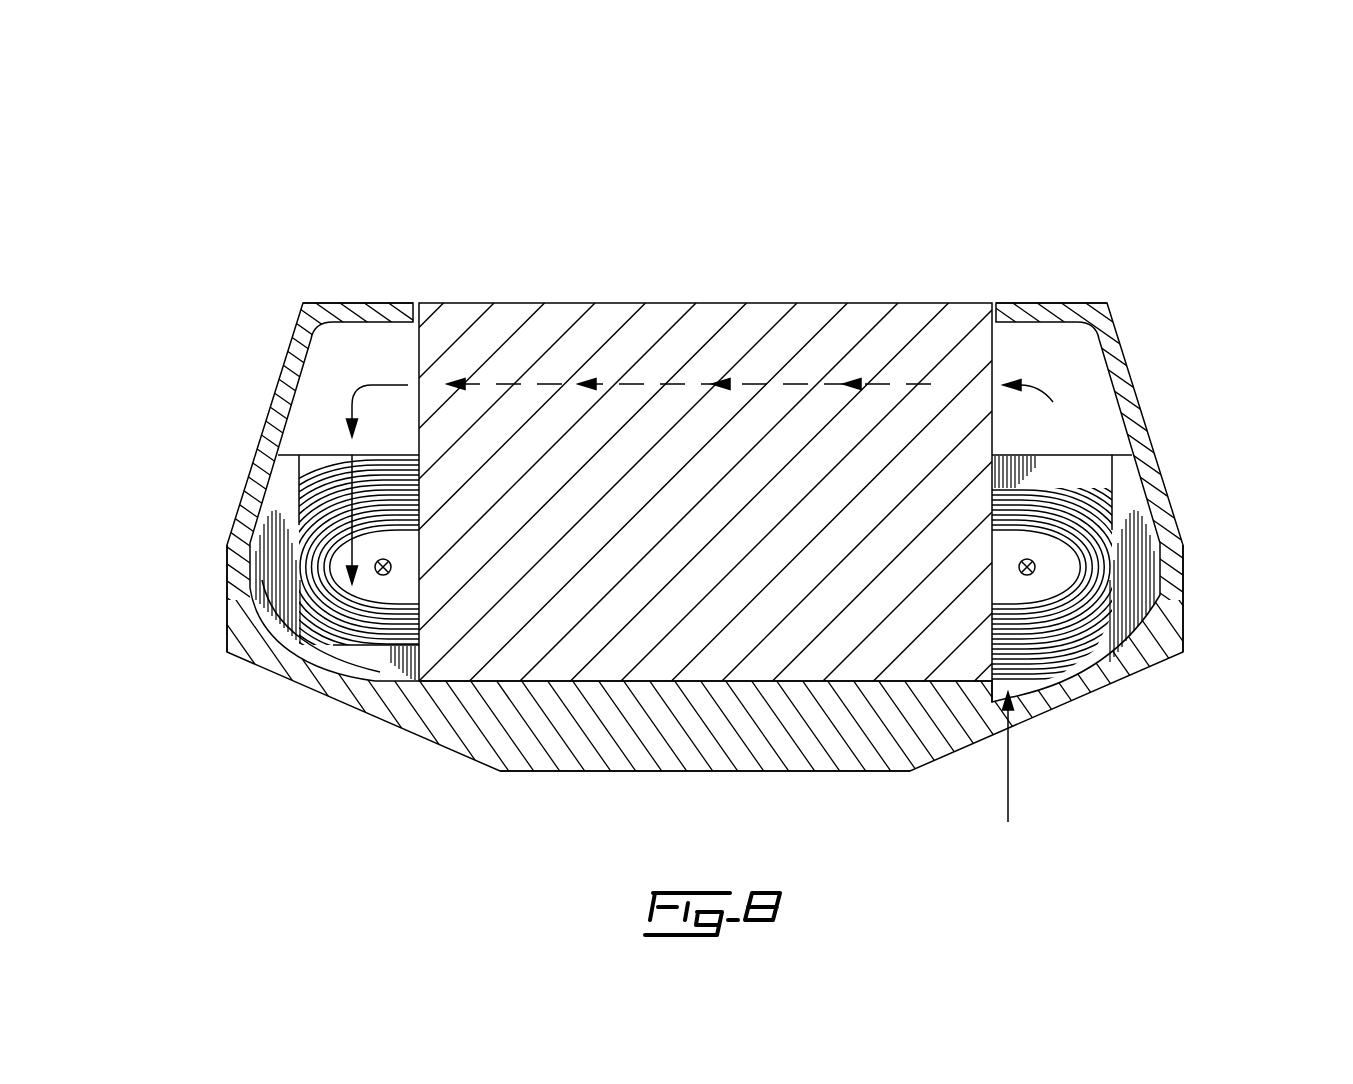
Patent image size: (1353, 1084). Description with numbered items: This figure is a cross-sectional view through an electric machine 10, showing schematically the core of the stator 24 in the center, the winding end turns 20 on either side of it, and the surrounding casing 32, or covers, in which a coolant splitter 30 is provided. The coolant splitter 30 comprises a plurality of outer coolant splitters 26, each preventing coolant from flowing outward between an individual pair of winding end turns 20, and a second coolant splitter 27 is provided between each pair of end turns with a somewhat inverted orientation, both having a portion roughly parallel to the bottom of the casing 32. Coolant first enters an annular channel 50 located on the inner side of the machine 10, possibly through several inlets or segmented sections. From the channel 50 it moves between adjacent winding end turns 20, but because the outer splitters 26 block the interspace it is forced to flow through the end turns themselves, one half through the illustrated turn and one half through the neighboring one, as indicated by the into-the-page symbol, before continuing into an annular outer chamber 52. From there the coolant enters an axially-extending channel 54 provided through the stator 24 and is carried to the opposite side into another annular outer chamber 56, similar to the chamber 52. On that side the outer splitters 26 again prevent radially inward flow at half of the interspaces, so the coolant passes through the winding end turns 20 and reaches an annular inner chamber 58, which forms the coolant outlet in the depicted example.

The machine 10 is at (455, 218).
The winding end turns 20 is at (323, 503).
The stator 24 is at (703, 317).
The coolant splitters 26 is at (317, 462).
The second coolant splitter 27 is at (332, 653).
The coolant splitter 30 is at (264, 596).
The casing 32 is at (293, 318).
The annular channel 50 is at (1015, 687).
The annular outer chamber 52 is at (1082, 380).
The axially-extending channel 54 is at (775, 385).
The annular outer chamber 56 is at (323, 368).
The annular inner chamber 58 is at (405, 687).